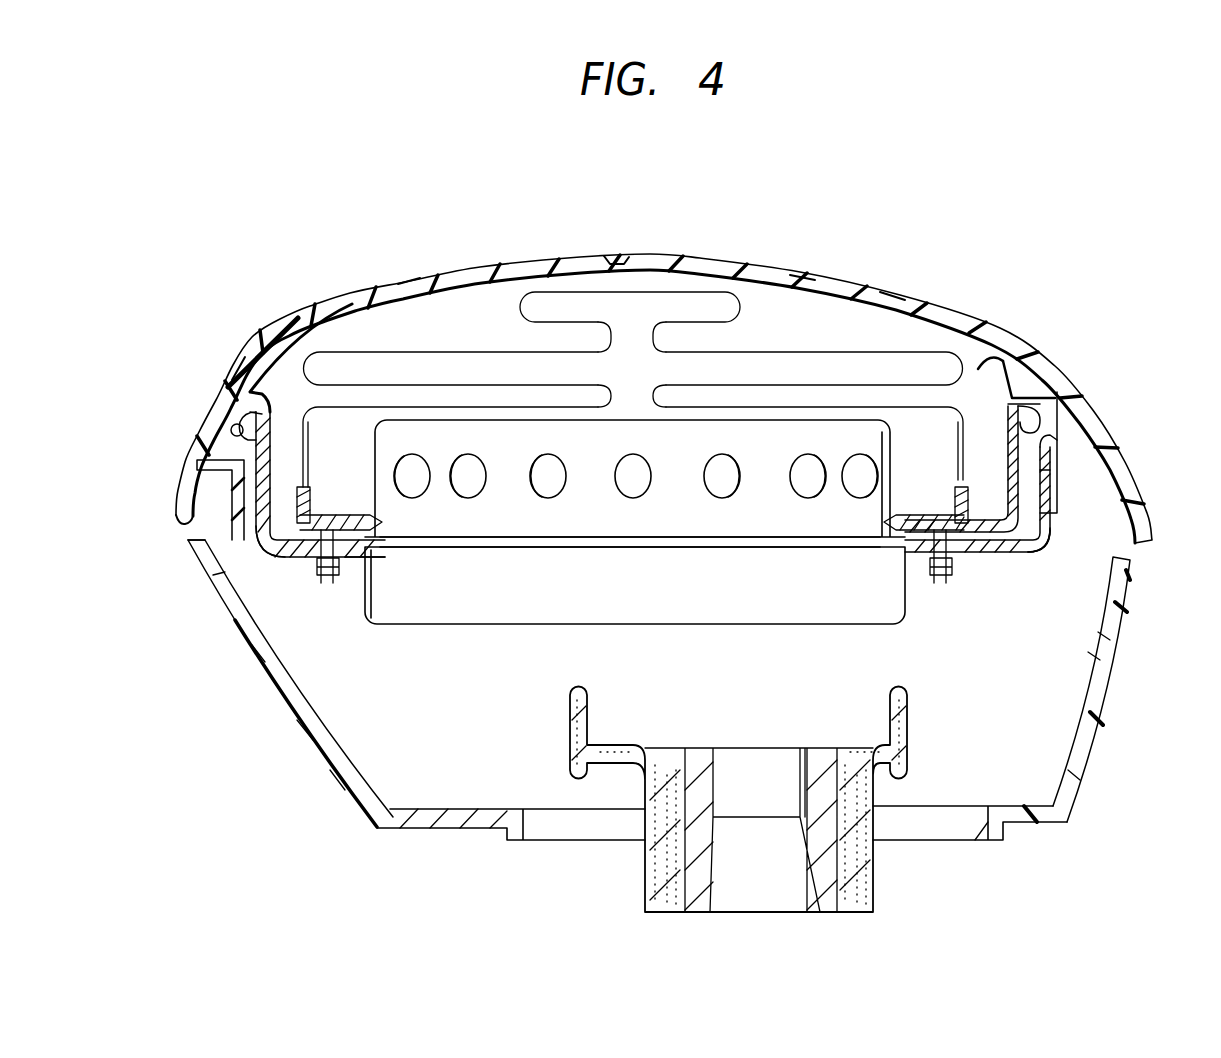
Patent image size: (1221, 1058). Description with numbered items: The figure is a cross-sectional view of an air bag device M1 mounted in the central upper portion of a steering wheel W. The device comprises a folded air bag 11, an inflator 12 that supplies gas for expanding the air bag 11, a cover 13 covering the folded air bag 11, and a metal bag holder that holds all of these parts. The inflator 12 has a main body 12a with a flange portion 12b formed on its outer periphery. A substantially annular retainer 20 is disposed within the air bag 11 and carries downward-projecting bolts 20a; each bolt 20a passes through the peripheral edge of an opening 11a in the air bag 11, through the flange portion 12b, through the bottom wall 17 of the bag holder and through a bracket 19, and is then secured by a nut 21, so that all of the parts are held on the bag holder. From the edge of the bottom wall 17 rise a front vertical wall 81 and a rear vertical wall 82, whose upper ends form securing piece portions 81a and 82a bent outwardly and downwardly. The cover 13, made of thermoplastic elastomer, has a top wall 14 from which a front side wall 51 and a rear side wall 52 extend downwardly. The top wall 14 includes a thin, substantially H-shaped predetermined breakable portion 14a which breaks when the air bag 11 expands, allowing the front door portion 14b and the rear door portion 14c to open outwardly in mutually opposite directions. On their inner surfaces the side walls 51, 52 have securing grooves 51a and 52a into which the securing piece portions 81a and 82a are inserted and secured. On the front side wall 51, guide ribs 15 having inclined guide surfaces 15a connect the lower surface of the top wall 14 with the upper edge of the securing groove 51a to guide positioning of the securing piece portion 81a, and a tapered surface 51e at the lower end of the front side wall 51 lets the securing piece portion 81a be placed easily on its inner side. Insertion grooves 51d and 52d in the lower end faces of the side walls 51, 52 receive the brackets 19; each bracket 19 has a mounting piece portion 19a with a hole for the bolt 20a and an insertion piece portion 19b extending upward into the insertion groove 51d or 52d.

The air bag 11 is at (700, 290).
The opening 11a is at (385, 522).
The inflator 12 is at (683, 623).
The main body 12a is at (598, 538).
The flange portion 12b is at (752, 545).
The cover 13 is at (252, 340).
The top wall 14 is at (508, 254).
The predetermined breakable portion 14a is at (620, 258).
The door portion 14b is at (800, 272).
The door portion 14c is at (440, 281).
The guide rib 15 is at (1028, 372).
The guide surface 15a is at (992, 357).
The bottom wall 17 is at (365, 548).
The bracket 19 is at (248, 568).
The mounting piece portion 19a is at (287, 560).
The insertion piece portion 19b is at (207, 540).
The retainer 20 is at (308, 512).
The bolt 20a is at (330, 580).
The nut 21 is at (347, 570).
The front side wall 51 is at (1055, 448).
The securing groove 51a is at (1050, 428).
The insertion groove 51d is at (1045, 460).
The tapered surface 51e is at (1050, 520).
The rear side wall 52 is at (231, 434).
The securing groove 52a is at (246, 416).
The insertion groove 52d is at (205, 482).
The vertical wall 81 is at (1006, 473).
The securing piece portion 81a is at (1042, 406).
The vertical wall 82 is at (272, 462).
The securing piece portion 82a is at (240, 424).
The air bag device M1 is at (885, 290).
The steering wheel W is at (1098, 832).